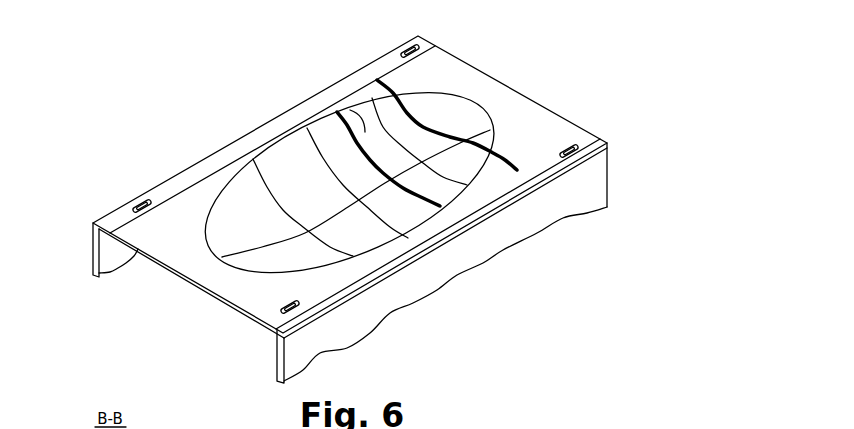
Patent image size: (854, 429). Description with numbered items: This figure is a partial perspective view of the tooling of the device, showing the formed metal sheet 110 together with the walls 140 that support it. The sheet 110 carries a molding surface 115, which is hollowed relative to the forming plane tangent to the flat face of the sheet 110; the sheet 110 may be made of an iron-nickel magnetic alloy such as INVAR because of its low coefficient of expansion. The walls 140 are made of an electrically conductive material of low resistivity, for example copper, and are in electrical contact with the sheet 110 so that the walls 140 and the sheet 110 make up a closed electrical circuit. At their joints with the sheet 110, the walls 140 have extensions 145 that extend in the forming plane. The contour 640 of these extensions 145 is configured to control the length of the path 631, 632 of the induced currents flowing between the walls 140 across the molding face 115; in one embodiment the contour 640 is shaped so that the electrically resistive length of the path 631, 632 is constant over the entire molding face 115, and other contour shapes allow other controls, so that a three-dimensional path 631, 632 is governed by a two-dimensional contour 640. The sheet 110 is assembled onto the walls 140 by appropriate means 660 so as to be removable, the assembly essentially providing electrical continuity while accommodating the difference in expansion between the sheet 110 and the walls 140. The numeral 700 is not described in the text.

The formed metal sheet 110 is at (515, 123).
The molding surface 115 is at (453, 107).
The walls 140 is at (92, 261).
The extensions 145 is at (202, 168).
The path of the induced currents 631 is at (337, 112).
The path of the induced currents 632 is at (410, 99).
The contour 640 is at (152, 208).
The assembly means 660 is at (277, 342).
The section view element 700 is at (482, 420).